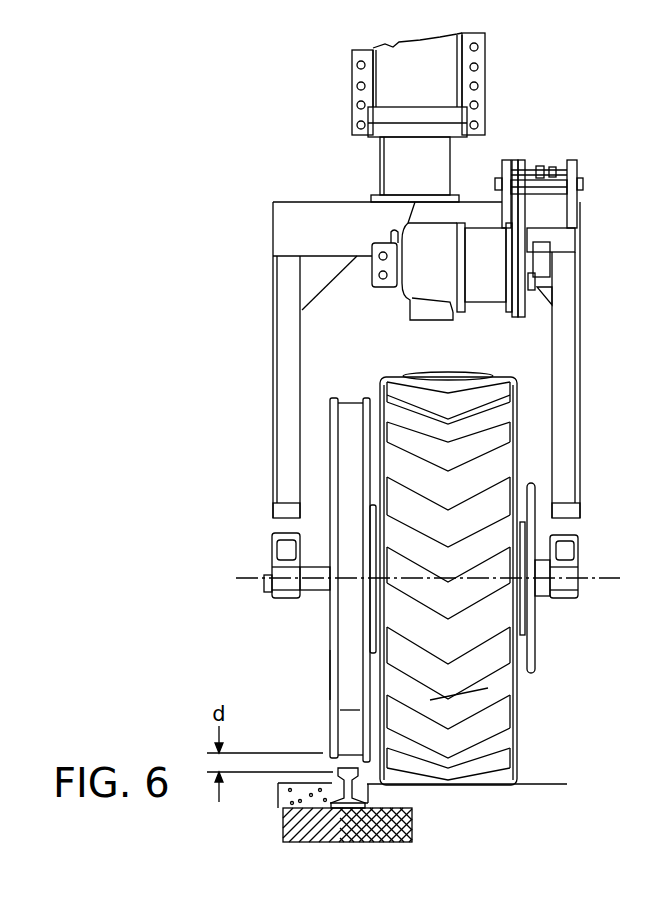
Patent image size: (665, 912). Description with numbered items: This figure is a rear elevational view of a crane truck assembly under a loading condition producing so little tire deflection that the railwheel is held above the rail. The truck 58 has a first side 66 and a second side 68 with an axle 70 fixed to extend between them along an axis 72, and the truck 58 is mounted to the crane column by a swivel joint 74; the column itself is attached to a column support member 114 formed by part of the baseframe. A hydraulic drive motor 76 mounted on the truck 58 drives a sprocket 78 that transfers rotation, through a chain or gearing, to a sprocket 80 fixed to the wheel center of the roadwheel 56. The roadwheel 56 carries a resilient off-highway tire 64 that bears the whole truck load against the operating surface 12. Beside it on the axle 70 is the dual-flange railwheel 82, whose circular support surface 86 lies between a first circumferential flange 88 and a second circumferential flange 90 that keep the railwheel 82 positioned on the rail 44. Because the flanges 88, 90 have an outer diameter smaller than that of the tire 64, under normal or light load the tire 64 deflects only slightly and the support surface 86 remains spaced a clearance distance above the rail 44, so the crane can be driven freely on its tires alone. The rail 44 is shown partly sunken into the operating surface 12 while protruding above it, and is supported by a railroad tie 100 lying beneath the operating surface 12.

The column support member 114 is at (478, 54).
The swivel joint 74 is at (427, 160).
The truck 58 is at (308, 225).
The first side 66 is at (285, 327).
The second side 68 is at (572, 332).
The hydraulic drive motor 76 is at (415, 274).
The sprocket 78 is at (537, 262).
The roadwheel 56 is at (524, 402).
The tire 64 is at (488, 688).
The sprocket 80 is at (533, 507).
The axle 70 is at (317, 573).
The axis 72 is at (413, 579).
The railwheel 82 is at (324, 634).
The first circumferential flange 88 is at (332, 678).
The second circumferential flange 90 is at (360, 698).
The circular support surface 86 is at (347, 730).
The operating surface 12 is at (550, 784).
The rail 44 is at (348, 802).
The railroad tie 100 is at (307, 834).